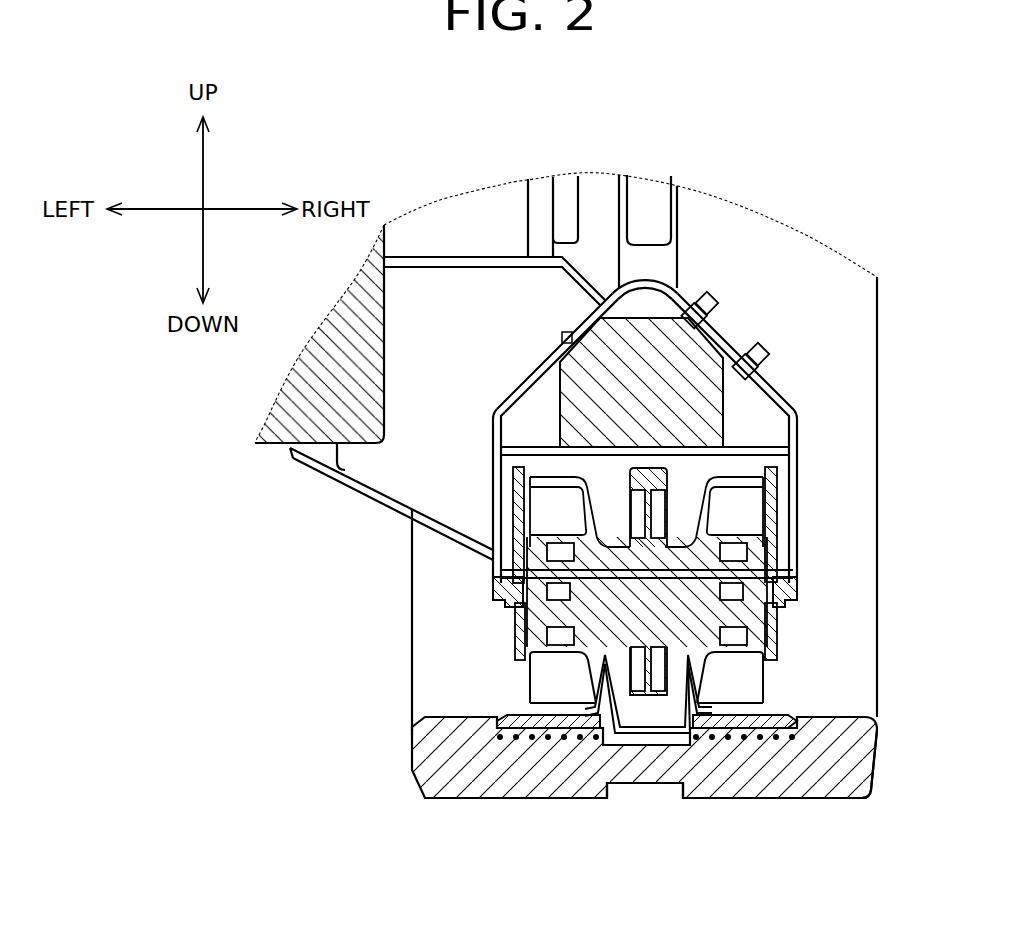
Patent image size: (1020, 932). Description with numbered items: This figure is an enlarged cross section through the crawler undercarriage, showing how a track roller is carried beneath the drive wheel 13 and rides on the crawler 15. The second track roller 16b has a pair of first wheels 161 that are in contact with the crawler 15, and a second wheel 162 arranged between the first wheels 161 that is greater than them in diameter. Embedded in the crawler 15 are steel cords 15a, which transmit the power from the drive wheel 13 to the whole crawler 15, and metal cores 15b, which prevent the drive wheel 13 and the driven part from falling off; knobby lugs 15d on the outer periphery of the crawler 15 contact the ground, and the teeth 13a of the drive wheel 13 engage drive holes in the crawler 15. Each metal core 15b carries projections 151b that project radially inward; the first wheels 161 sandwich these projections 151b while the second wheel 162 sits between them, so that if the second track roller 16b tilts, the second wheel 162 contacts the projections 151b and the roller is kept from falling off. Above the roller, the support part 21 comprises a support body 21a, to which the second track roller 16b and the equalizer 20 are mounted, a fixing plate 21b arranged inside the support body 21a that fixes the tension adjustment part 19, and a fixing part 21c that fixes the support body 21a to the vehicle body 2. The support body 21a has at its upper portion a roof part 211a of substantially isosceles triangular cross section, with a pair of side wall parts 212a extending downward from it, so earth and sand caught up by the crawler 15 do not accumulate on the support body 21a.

The vehicle body 2 is at (250, 443).
The drive wheel 13 is at (574, 224).
The teeth 13a is at (643, 247).
The crawler 15 is at (620, 795).
The steel cords 15a is at (500, 740).
The metal cores 15b is at (613, 785).
The knobby lugs 15d is at (865, 802).
The second track roller 16b is at (600, 680).
The projections 151b is at (580, 675).
The first wheels 161 is at (647, 748).
The second wheel 162 is at (640, 728).
The tension adjustment part 19 is at (597, 362).
The equalizer 20 is at (800, 547).
The support part 21 is at (565, 376).
The support body 21a is at (791, 370).
The fixing plate 21b is at (492, 418).
The fixing part 21c is at (388, 467).
The roof part 211a is at (530, 375).
The side wall parts 212a is at (495, 565).